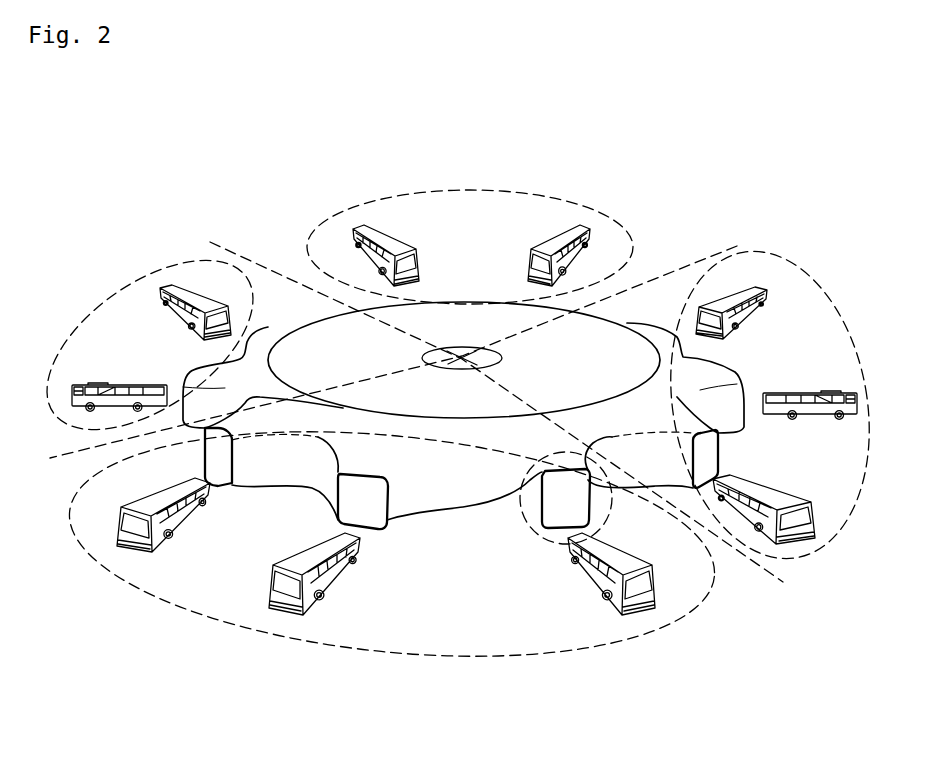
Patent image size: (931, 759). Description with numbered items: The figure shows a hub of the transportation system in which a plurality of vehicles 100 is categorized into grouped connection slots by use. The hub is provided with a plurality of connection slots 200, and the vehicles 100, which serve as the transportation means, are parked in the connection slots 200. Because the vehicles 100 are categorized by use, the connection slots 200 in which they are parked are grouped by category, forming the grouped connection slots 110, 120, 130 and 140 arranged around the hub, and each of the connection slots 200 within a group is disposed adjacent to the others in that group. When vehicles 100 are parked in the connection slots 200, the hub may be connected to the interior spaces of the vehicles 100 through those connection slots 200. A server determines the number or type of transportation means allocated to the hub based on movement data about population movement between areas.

The vehicle 100 is at (647, 607).
The grouped connection slots 110 is at (366, 645).
The grouped connection slots 120 is at (777, 253).
The grouped connection slots 130 is at (527, 192).
The grouped connection slots 140 is at (165, 265).
The connection slot 200 is at (543, 540).